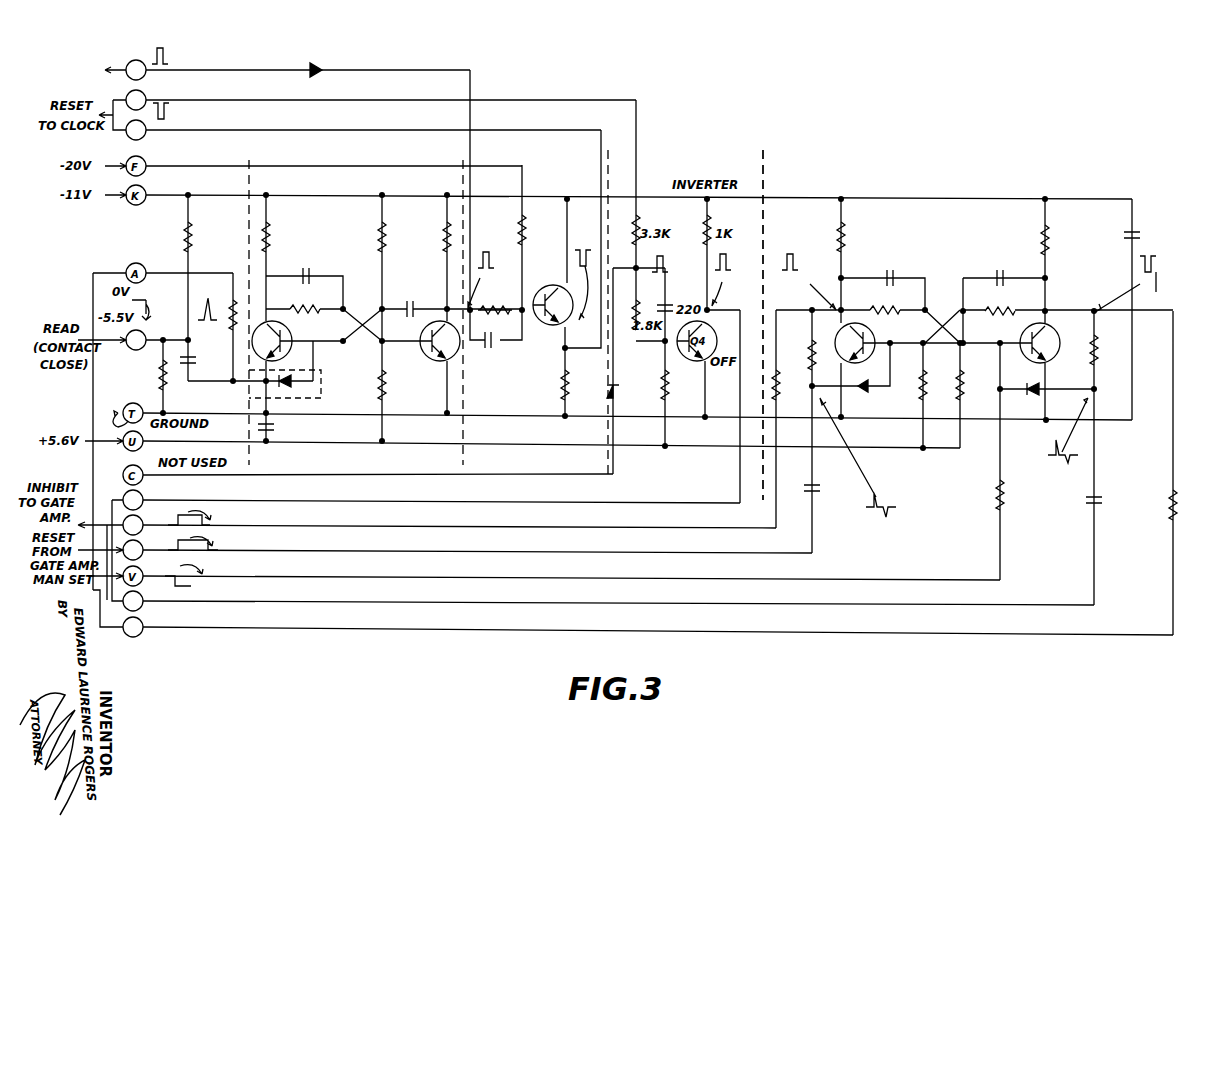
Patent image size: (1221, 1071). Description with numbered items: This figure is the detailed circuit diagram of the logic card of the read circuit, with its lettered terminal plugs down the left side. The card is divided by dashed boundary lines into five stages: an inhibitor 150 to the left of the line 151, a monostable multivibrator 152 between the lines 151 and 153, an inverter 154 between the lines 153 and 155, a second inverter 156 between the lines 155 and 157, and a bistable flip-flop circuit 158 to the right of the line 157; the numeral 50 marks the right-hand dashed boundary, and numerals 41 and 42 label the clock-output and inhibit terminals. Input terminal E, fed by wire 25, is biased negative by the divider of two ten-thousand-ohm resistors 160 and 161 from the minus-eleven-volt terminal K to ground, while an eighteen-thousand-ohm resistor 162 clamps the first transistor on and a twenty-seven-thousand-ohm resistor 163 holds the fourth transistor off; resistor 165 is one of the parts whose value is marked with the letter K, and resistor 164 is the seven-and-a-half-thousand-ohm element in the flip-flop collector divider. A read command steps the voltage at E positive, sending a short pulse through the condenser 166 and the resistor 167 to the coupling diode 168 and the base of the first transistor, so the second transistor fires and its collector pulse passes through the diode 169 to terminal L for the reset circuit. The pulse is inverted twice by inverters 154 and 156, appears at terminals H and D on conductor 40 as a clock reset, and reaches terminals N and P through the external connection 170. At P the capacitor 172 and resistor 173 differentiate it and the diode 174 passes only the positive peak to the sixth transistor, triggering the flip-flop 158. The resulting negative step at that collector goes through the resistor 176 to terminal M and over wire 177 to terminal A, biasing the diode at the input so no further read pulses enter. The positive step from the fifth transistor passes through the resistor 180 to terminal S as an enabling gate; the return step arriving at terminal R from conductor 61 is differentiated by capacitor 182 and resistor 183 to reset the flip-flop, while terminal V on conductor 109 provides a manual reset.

The terminal L clock output 41 is at (120, 64).
The conductor 40 is at (108, 106).
The wire 25 is at (112, 344).
The inhibit to gate amplifier terminal S 42 is at (100, 508).
The conductor 61 is at (88, 548).
The conductor 109 is at (118, 613).
The external connection 170 is at (112, 500).
The wire 177 is at (90, 410).
The circuit boundary 50 is at (761, 159).
The inhibitor 150 is at (215, 158).
The line 151 is at (252, 174).
The monostable multivibrator 152 is at (352, 158).
The line 153 is at (463, 174).
The inverter 154 is at (506, 189).
The line 155 is at (606, 171).
The inverter 156 is at (656, 182).
The line 157 is at (767, 189).
The bistable flip-flop circuit 158 is at (1016, 188).
The 10K ohm resistor 160 is at (188, 237).
The 10K ohm resistor 161 is at (159, 383).
The 18K ohm resistor 162 is at (382, 318).
The 27K ohm resistor 163 is at (662, 385).
The 7.5K resistor 164 is at (1002, 303).
The resistor 165 is at (1042, 240).
The 220 micromicrofarad condenser 166 is at (206, 378).
The 4.7K ohm resistor 167 is at (237, 324).
The coupling diode 168 is at (290, 394).
The diode 169 is at (317, 67).
The 220 mmfd. capacitor 172 is at (1094, 496).
The 10K ohm resistor 173 is at (1096, 350).
The diode 174 is at (1032, 396).
The 4.7K ohm resistor 176 is at (1172, 492).
The 4.7K ohm resistor 180 is at (791, 386).
The 220 mmfd. capacitor 182 is at (812, 487).
The 10K ohm resistor 183 is at (798, 345).